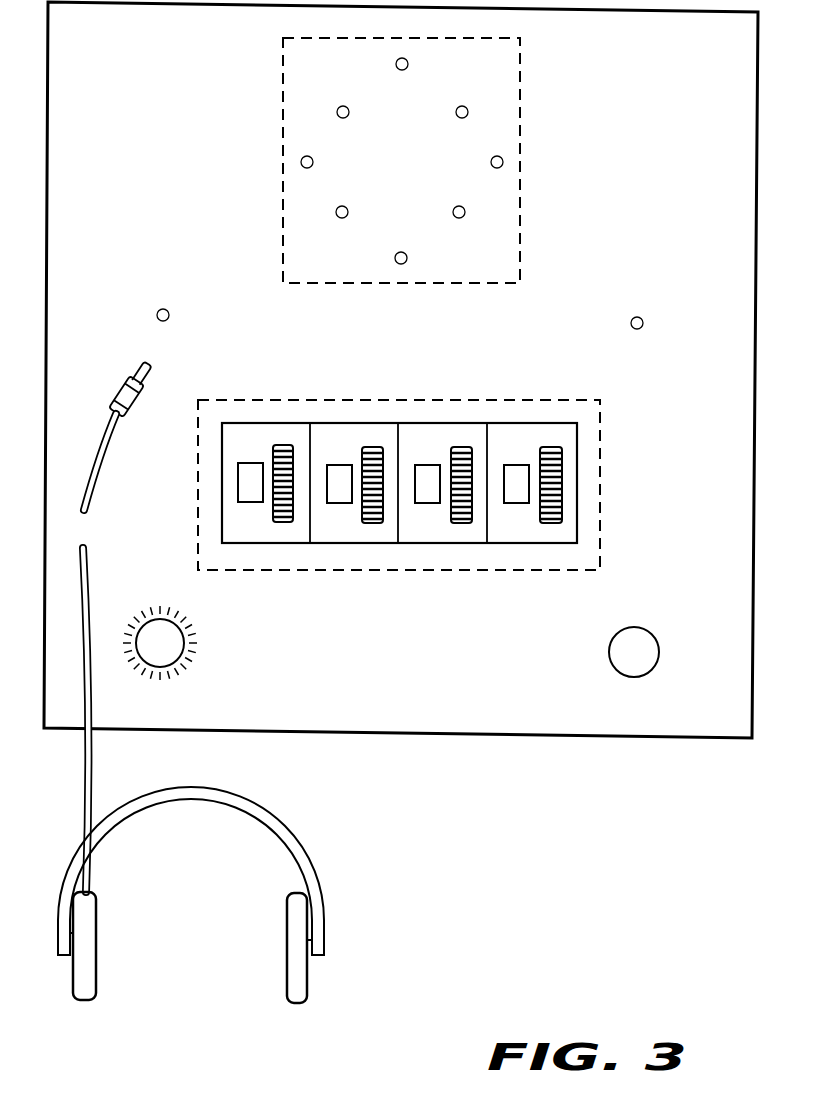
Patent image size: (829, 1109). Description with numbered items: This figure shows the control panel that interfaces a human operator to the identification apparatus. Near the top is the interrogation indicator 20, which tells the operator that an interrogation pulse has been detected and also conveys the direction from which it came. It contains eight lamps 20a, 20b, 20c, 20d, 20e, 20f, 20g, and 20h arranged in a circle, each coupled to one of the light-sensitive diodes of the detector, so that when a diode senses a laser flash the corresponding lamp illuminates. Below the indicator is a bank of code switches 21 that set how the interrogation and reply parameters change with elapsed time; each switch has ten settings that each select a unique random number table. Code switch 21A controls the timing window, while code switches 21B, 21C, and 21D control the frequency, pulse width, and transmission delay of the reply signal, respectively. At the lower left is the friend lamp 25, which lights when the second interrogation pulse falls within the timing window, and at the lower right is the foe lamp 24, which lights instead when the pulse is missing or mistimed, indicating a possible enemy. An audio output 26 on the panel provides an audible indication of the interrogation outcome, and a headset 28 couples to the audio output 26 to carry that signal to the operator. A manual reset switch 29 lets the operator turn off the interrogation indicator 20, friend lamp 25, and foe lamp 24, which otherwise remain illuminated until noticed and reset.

The interrogation indicator 20 is at (521, 64).
The lamp 20a is at (402, 70).
The lamp 20b is at (473, 100).
The lamp 20c is at (491, 162).
The lamp 20d is at (464, 216).
The lamp 20e is at (401, 252).
The lamp 20f is at (337, 217).
The lamp 20g is at (313, 162).
The lamp 20h is at (338, 107).
The code switches 21 is at (400, 405).
The code switch 21A is at (253, 533).
The code switch 21B is at (342, 533).
The code switch 21C is at (430, 533).
The code switch 21D is at (519, 533).
The foe lamp 24 is at (640, 627).
The friend lamp 25 is at (147, 620).
The audio output 26 is at (162, 309).
The headset 28 is at (326, 942).
The manual reset switch 29 is at (640, 318).